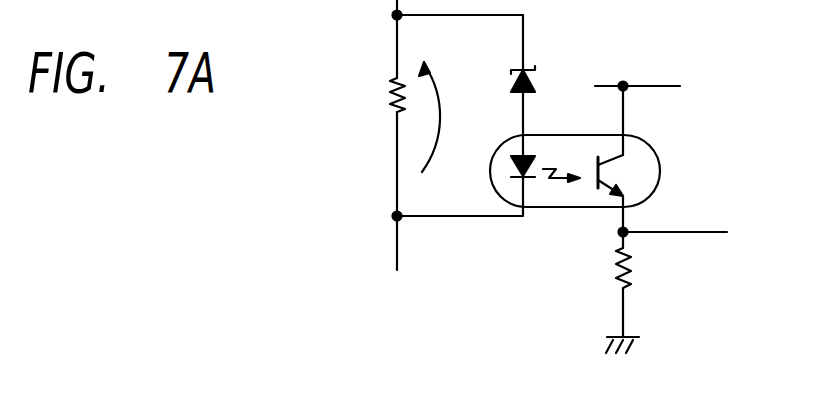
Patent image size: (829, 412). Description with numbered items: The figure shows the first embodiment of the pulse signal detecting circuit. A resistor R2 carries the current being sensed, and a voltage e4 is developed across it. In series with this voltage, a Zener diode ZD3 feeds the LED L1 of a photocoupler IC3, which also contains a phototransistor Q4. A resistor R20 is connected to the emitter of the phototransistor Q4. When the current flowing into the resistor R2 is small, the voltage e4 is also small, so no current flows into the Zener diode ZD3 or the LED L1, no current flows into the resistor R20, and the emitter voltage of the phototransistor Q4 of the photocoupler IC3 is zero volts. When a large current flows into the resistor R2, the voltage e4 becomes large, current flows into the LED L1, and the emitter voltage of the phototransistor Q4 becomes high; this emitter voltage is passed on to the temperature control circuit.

The resistor R2 is at (390, 99).
The voltage e4 is at (447, 117).
The Zener diode ZD3 is at (538, 82).
The photocoupler IC3 is at (553, 208).
The LED L1 is at (532, 151).
The phototransistor Q4 is at (618, 176).
The resistor R20 is at (608, 268).